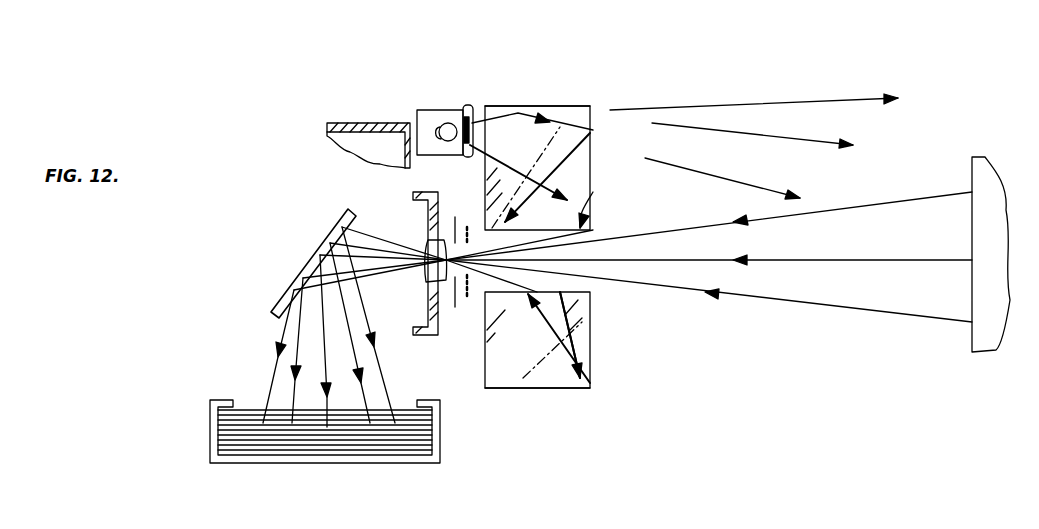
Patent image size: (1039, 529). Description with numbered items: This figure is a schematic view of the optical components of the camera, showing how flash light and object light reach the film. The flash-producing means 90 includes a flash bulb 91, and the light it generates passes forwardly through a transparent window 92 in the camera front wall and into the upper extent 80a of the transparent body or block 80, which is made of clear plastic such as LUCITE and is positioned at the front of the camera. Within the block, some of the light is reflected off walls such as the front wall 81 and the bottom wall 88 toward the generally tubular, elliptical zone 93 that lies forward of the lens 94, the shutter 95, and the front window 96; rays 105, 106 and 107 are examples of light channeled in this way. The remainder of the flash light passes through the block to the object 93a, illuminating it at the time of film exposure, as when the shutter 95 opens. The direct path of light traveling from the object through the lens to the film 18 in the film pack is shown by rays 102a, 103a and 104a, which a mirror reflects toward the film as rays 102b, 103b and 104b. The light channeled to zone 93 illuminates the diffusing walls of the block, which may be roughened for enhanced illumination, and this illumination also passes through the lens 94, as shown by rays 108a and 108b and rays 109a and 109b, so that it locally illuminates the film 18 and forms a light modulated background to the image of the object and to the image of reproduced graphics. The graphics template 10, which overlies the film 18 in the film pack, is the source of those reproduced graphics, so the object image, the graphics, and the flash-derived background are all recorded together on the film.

The graphics template 10 is at (307, 407).
The film 18 is at (337, 440).
The transparent body or block 80 is at (592, 100).
The upper extent of the block 80a is at (555, 105).
The front wall of the body 81 is at (592, 338).
The bottom wall of the body 88 is at (510, 390).
The means for producing a light flash 90 is at (428, 110).
The flash bulb 91 is at (448, 122).
The transparent window 92 is at (471, 107).
The zone 93 is at (583, 247).
The object 93a is at (968, 340).
The lens 94 is at (427, 238).
The shutter 95 is at (456, 216).
The front window 96 is at (465, 300).
The ray 102a is at (831, 208).
The ray 102b is at (300, 325).
The ray 103a is at (856, 258).
The ray 103b is at (322, 338).
The ray 104a is at (755, 305).
The ray 104b is at (358, 358).
The ray 105 is at (593, 152).
The ray 106 is at (593, 192).
The ray 107 is at (567, 318).
The ray 108a is at (367, 278).
The ray 108b is at (268, 388).
The ray 109a is at (367, 228).
The ray 109b is at (387, 387).